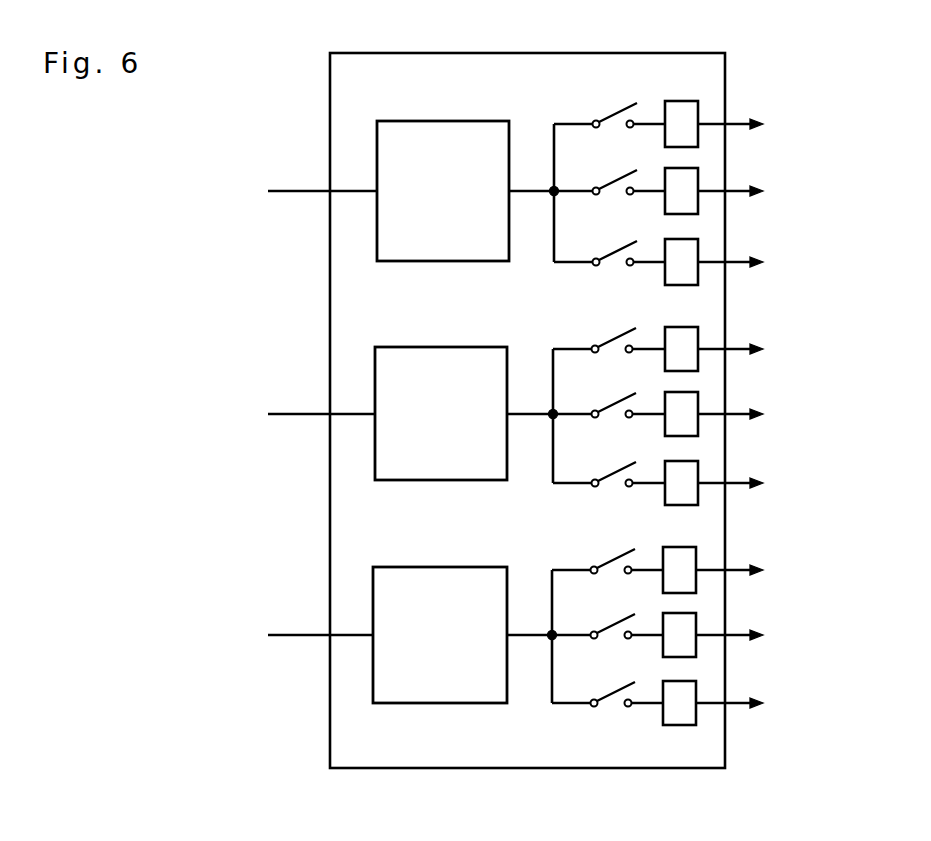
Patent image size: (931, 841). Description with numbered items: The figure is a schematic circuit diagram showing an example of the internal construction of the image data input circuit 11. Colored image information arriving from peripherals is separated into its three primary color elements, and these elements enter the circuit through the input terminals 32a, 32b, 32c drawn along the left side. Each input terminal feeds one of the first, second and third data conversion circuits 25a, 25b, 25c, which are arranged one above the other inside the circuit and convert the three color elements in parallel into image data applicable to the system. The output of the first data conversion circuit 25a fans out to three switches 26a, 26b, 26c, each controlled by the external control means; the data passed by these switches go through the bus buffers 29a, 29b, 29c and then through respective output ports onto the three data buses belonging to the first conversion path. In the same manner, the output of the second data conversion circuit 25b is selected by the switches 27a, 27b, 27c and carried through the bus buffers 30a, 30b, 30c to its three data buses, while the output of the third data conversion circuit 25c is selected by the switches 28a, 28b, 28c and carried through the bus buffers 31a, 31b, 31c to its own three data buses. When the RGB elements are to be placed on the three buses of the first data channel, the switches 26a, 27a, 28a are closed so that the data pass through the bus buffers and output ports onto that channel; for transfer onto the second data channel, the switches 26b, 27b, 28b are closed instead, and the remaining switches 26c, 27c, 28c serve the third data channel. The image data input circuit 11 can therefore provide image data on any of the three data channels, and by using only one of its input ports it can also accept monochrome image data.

The image data input circuit 11 is at (388, 53).
The first data conversion circuit 25a is at (408, 121).
The second data conversion circuit 25b is at (432, 347).
The third data conversion circuit 25c is at (435, 567).
The switch 26a is at (609, 113).
The switch 26b is at (609, 181).
The switch 26c is at (609, 251).
The switch 27a is at (607, 339).
The switch 27b is at (609, 403).
The switch 27c is at (609, 473).
The switch 28a is at (606, 560).
The switch 28b is at (607, 625).
The switch 28c is at (607, 693).
The bus buffer 29a is at (699, 108).
The bus buffer 29b is at (699, 178).
The bus buffer 29c is at (699, 248).
The bus buffer 30a is at (698, 335).
The bus buffer 30b is at (698, 402).
The bus buffer 30c is at (698, 471).
The bus buffer 31a is at (697, 553).
The bus buffer 31b is at (697, 620).
The bus buffer 31c is at (697, 688).
The input terminal 32a is at (293, 194).
The input terminal 32b is at (294, 416).
The input terminal 32c is at (289, 637).